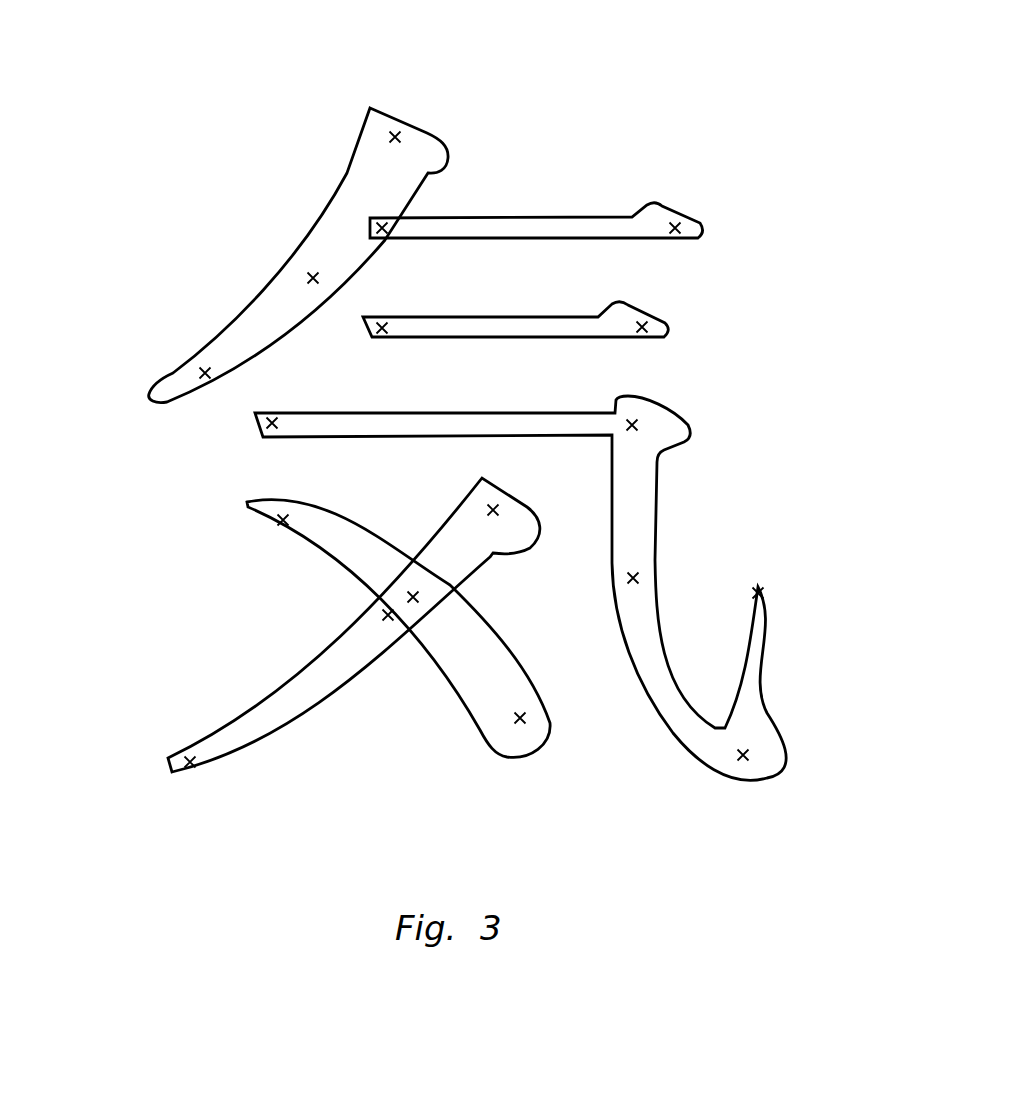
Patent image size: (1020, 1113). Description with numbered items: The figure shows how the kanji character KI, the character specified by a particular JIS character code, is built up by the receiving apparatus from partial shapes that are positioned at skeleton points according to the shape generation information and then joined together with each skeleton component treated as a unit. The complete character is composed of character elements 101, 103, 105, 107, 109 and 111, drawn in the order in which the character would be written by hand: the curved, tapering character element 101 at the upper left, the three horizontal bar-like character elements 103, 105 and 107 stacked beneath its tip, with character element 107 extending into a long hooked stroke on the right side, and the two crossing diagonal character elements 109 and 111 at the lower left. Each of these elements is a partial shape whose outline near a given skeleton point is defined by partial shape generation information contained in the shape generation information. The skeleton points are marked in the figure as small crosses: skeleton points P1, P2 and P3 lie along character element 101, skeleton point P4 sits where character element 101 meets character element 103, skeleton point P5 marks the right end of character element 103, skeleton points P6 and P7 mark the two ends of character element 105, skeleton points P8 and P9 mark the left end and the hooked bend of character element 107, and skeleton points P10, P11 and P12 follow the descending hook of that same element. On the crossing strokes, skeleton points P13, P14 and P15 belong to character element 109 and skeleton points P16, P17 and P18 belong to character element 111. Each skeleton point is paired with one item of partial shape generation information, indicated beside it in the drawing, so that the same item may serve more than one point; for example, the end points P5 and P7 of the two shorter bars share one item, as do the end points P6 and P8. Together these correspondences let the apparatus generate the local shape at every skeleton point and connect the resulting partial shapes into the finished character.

The character element 101 is at (370, 108).
The character element 103 is at (520, 218).
The character element 105 is at (503, 327).
The character element 107 is at (452, 413).
The character element 109 is at (263, 698).
The character element 111 is at (470, 713).
The skeleton point P1 is at (391, 137).
The skeleton point P2 is at (313, 274).
The skeleton point P3 is at (205, 369).
The skeleton point P4 is at (383, 224).
The skeleton point P5 is at (705, 230).
The skeleton point P6 is at (383, 324).
The skeleton point P7 is at (655, 328).
The skeleton point P8 is at (273, 430).
The skeleton point P9 is at (637, 425).
The skeleton point P10 is at (629, 579).
The skeleton point P11 is at (746, 758).
The skeleton point P12 is at (763, 594).
The skeleton point P13 is at (494, 506).
The skeleton point P14 is at (388, 620).
The skeleton point P15 is at (185, 762).
The skeleton point P16 is at (279, 520).
The skeleton point P17 is at (413, 593).
The skeleton point P18 is at (520, 722).